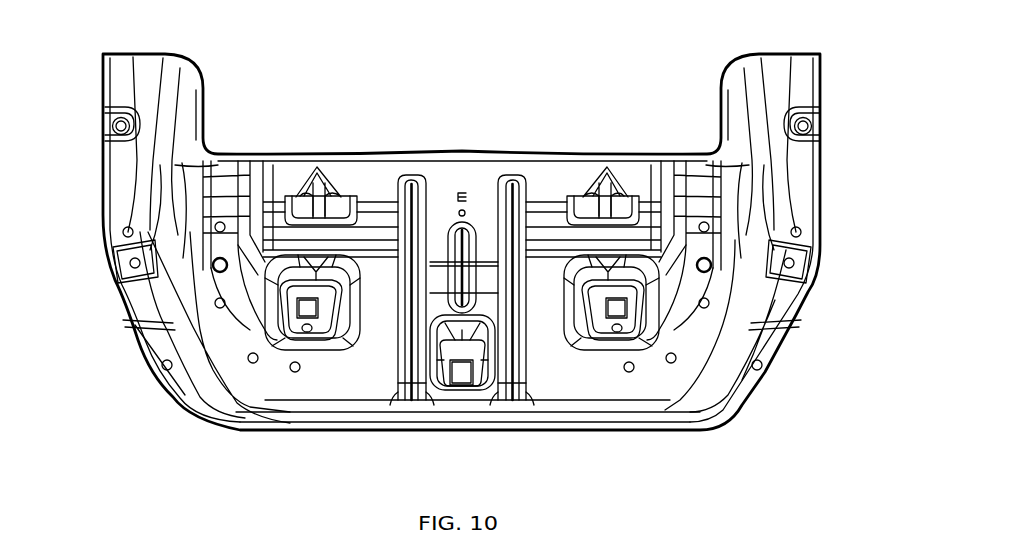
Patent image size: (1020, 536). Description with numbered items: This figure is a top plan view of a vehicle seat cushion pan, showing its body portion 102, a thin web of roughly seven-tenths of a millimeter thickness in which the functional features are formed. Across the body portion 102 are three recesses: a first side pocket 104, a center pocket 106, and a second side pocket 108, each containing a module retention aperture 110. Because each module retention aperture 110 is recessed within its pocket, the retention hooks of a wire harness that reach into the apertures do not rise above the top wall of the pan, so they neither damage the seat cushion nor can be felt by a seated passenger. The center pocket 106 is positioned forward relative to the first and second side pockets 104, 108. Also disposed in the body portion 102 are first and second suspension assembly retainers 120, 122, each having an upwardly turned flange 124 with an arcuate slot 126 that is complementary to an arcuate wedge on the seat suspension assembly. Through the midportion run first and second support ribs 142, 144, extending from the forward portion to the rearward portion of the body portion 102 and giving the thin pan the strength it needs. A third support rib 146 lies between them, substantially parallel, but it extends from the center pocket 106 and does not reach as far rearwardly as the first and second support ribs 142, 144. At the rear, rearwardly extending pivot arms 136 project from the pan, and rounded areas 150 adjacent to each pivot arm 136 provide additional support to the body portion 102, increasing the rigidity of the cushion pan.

The body portion 102 is at (103, 97).
The first side pocket 104 is at (288, 330).
The center pocket 106 is at (446, 381).
The second side pocket 108 is at (598, 330).
The module retention aperture 110 is at (308, 314).
The first suspension assembly retainer 120 is at (276, 205).
The second suspension assembly retainer 122 is at (547, 200).
The upwardly turned flange 124 is at (348, 197).
The arcuate slot 126 is at (318, 171).
The rearwardly extending pivot arm 136 is at (150, 73).
The first support rib 142 is at (400, 185).
The second support rib 144 is at (522, 183).
The third support rib 146 is at (471, 226).
The rounded area 150 is at (187, 206).